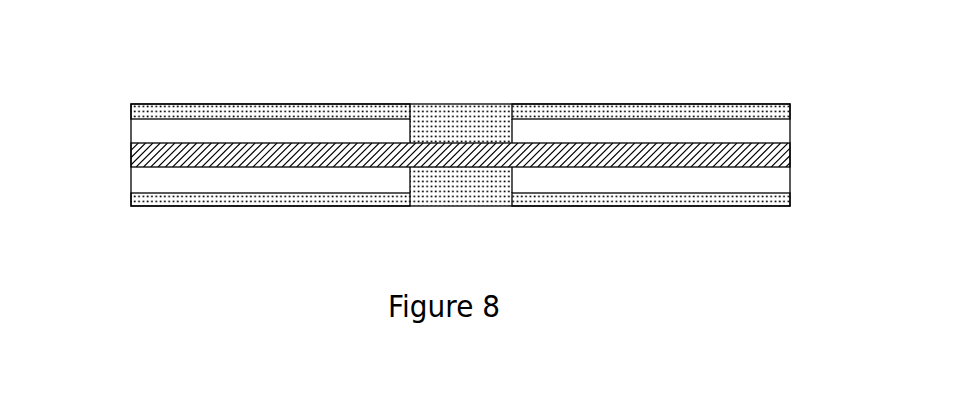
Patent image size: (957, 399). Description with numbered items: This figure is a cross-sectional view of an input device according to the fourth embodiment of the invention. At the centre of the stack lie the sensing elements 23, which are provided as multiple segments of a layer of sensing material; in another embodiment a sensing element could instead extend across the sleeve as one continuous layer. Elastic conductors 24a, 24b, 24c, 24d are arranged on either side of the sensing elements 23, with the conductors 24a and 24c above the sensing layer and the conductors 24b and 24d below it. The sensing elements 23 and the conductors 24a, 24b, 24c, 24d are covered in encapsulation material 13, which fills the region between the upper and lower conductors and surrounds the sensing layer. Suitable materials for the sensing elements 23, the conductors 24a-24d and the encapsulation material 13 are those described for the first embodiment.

The encapsulation material 13 is at (462, 127).
The sensing elements 23 is at (780, 147).
The elastic conductor 24a is at (303, 115).
The elastic conductor 24b is at (228, 193).
The elastic conductor 24c is at (773, 114).
The elastic conductor 24d is at (742, 193).